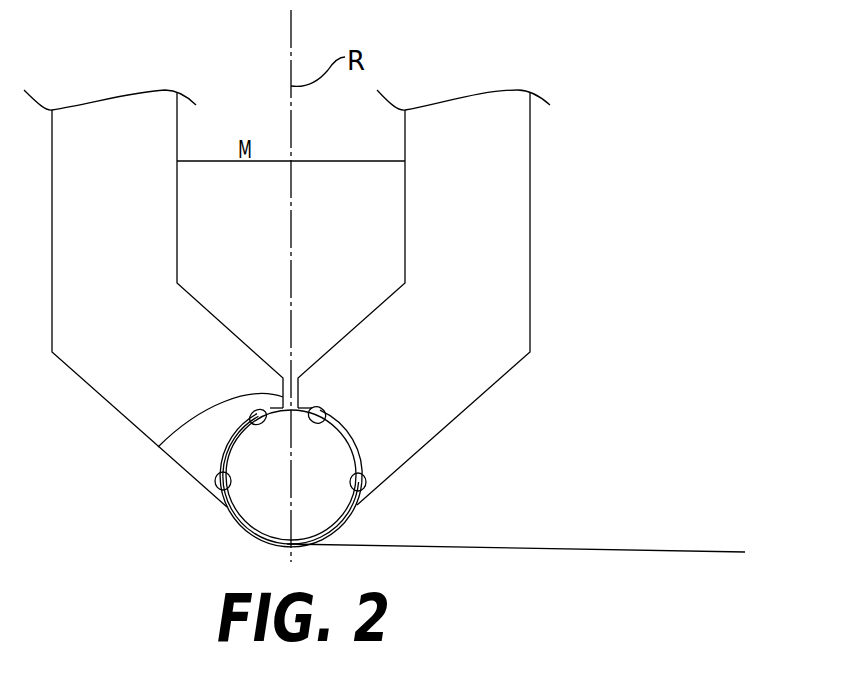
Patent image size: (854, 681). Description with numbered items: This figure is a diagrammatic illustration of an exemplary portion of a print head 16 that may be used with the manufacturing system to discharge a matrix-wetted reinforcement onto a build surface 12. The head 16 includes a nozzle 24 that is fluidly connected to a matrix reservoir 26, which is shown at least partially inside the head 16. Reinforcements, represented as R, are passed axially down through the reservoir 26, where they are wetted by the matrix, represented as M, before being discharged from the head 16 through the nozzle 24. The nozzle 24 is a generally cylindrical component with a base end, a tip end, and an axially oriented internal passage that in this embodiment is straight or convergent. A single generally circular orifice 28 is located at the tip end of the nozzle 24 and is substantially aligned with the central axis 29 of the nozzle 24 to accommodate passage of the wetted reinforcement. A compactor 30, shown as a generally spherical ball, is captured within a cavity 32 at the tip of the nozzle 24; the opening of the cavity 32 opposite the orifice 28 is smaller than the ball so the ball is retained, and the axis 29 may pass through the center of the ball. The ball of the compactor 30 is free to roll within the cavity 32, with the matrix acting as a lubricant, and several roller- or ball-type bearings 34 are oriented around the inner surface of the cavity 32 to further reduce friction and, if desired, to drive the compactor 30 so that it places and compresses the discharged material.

The substrate 12 is at (591, 549).
The head 16 is at (656, 157).
The nozzle 24 is at (531, 145).
The matrix reservoir 26 is at (177, 126).
The orifice 28 is at (158, 447).
The central axis 29 is at (291, 43).
The compactor 30 is at (344, 528).
The cavity 32 is at (333, 414).
The bearings 34 is at (318, 410).